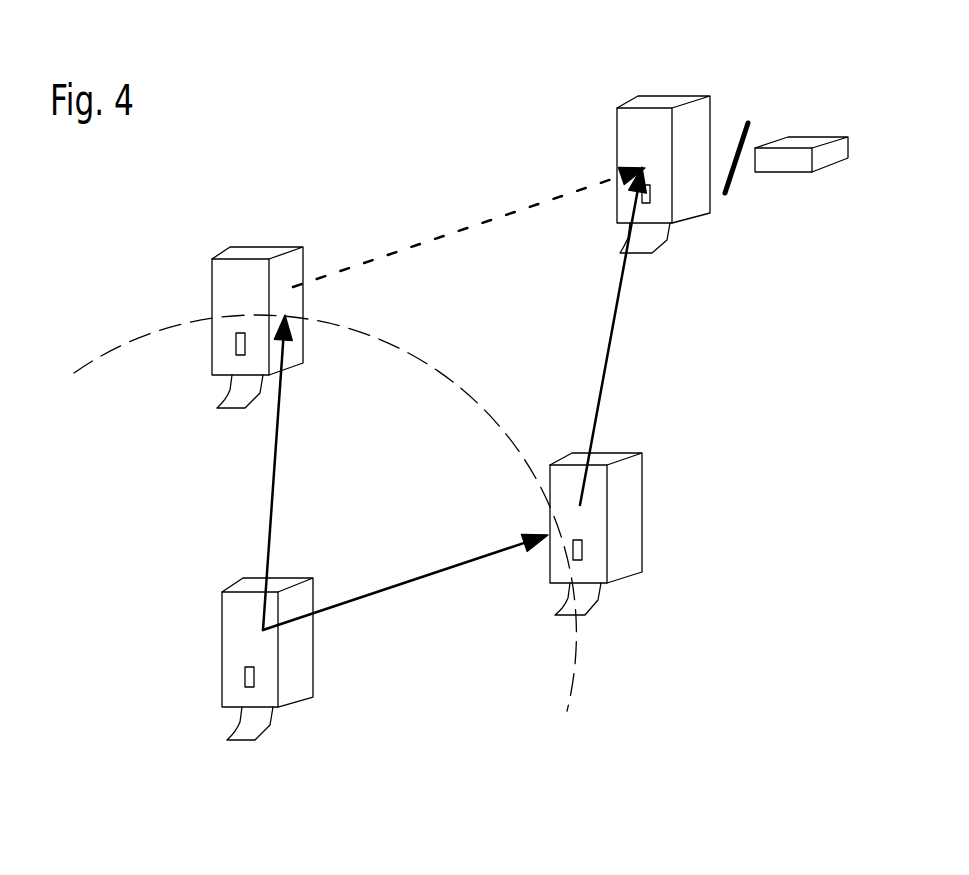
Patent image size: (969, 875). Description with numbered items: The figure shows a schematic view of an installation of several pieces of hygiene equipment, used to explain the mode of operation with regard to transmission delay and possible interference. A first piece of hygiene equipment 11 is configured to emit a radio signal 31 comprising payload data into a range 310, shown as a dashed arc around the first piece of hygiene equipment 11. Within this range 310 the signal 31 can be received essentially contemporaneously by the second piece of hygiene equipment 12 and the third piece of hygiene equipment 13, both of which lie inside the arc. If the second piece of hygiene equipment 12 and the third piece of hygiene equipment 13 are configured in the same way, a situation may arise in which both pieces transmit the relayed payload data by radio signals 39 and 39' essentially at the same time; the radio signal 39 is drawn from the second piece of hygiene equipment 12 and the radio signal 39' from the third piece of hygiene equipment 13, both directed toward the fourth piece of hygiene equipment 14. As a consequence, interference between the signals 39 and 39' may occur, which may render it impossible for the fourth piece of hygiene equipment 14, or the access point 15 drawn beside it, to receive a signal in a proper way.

The first piece of hygiene equipment 11 is at (222, 622).
The second piece of hygiene equipment 12 is at (644, 510).
The third piece of hygiene equipment 13 is at (250, 245).
The fourth piece of hygiene equipment 14 is at (652, 94).
The access point 15 is at (818, 136).
The radio signal 31 is at (440, 576).
The radio signal 39 is at (639, 336).
The radio signal 39' is at (469, 225).
The range 310 is at (453, 394).